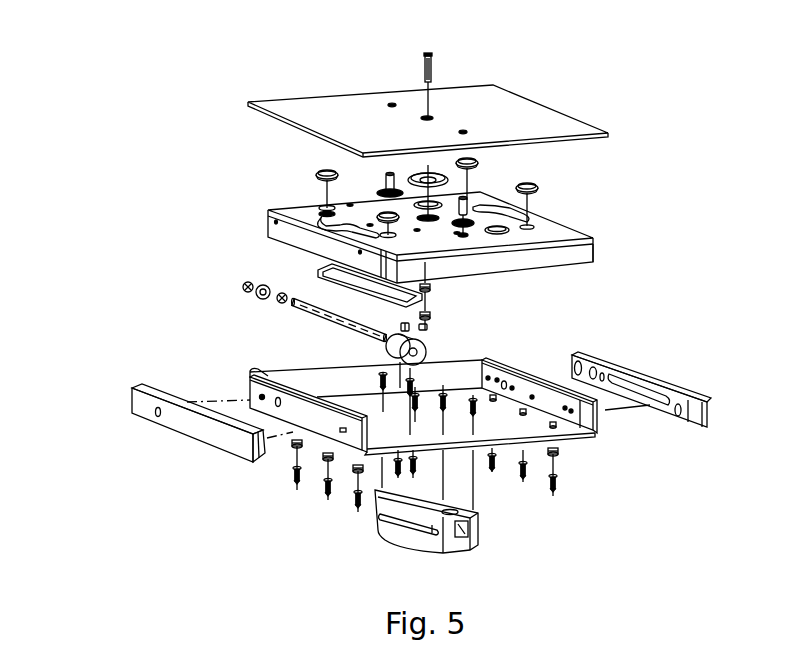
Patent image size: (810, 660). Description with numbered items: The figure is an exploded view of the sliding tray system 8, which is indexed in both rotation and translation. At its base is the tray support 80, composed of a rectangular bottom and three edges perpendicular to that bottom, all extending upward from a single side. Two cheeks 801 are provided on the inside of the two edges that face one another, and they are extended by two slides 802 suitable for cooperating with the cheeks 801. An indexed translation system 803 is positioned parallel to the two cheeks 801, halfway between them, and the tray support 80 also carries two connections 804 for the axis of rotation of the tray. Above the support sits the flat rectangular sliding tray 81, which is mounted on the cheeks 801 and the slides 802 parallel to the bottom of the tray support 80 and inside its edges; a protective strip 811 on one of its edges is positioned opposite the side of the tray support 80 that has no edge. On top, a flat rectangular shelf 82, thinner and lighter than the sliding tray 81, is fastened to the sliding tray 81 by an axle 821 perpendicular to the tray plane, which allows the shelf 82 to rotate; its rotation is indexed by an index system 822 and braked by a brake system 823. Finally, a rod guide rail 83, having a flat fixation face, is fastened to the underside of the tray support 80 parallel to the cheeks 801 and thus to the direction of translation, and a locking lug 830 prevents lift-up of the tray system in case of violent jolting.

The sliding tray system 8 is at (122, 280).
The tray support 80 is at (463, 372).
The cheeks 801 is at (280, 378).
The slides 802 is at (240, 447).
The indexed translation system 803 is at (227, 275).
The connections 804 is at (270, 377).
The sliding tray 81 is at (570, 237).
The protective strip 811 is at (593, 258).
The shelf 82 is at (575, 127).
The axle 821 is at (433, 63).
The index system 822 is at (553, 193).
The brake system 823 is at (318, 172).
The rod guide rail 83 is at (473, 550).
The locking lug 830 is at (475, 540).